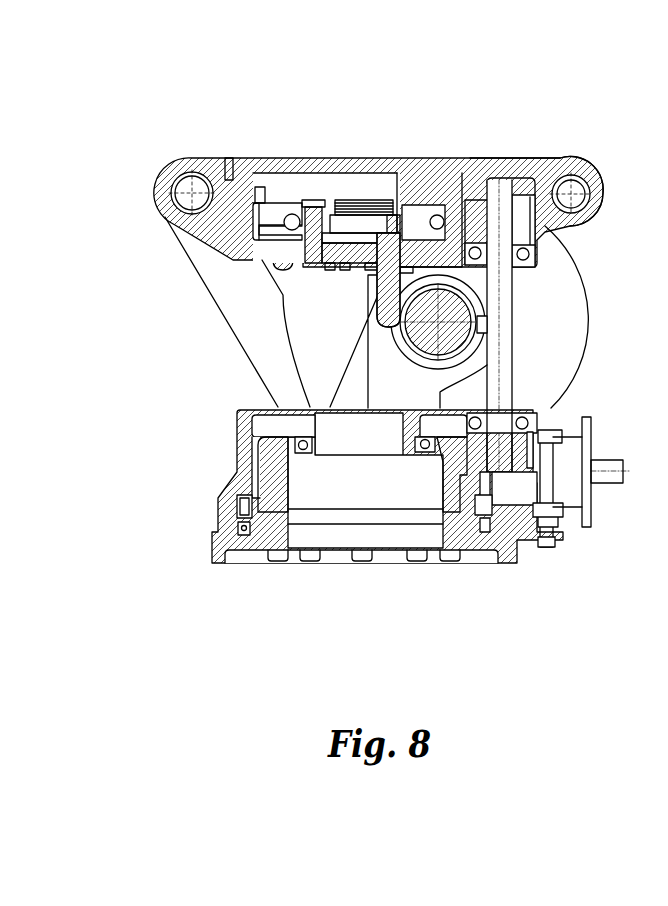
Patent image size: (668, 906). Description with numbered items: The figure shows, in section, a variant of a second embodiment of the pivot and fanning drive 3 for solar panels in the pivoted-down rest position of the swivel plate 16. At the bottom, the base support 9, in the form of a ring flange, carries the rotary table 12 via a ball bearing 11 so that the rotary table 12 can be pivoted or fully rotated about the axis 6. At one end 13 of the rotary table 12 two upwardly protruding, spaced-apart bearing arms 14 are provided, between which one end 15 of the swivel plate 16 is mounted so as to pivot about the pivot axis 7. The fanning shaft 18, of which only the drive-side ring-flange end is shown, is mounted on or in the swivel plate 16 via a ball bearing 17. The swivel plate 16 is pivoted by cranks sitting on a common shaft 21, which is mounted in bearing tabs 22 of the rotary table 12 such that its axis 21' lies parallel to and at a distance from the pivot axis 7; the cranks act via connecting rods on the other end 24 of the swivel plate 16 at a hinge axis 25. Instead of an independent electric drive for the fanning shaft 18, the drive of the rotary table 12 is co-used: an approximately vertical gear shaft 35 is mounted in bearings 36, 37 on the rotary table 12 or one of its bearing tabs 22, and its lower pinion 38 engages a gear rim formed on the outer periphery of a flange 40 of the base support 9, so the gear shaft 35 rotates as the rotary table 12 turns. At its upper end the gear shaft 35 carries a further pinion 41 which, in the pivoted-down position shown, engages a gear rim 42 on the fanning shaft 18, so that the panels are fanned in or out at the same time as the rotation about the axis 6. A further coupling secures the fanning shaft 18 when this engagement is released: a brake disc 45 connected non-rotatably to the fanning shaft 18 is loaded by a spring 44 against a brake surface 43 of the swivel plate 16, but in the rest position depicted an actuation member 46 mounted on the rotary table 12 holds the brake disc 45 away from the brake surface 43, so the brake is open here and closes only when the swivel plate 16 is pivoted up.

The pivot and fanning drive 3 is at (148, 592).
The axis 6 is at (363, 490).
The pivot axis 7 is at (186, 192).
The base support 9 is at (270, 555).
The ball bearing 11 is at (243, 537).
The rotary table 12 is at (227, 487).
The end 13 is at (236, 405).
The bearing arms 14 is at (220, 290).
The end 15 is at (213, 157).
The swivel plate 16 is at (517, 165).
The ball bearing 17 is at (290, 215).
The fanning shaft 18 is at (447, 205).
The shaft 21 is at (404, 322).
The axis 21' is at (483, 322).
The bearing tabs 22 is at (357, 367).
The end 24 is at (573, 158).
The hinge axis 25 is at (574, 193).
The gear shaft 35 is at (505, 365).
The bearing 36 is at (527, 425).
The bearing 37 is at (528, 255).
The pinion 38 is at (517, 453).
The flange 40 is at (275, 488).
The pinion 41 is at (538, 243).
The gear rim 42 is at (473, 200).
The brake surface 43 is at (343, 262).
The spring 44 is at (356, 202).
The brake disc 45 is at (330, 209).
The actuation member 46 is at (385, 286).